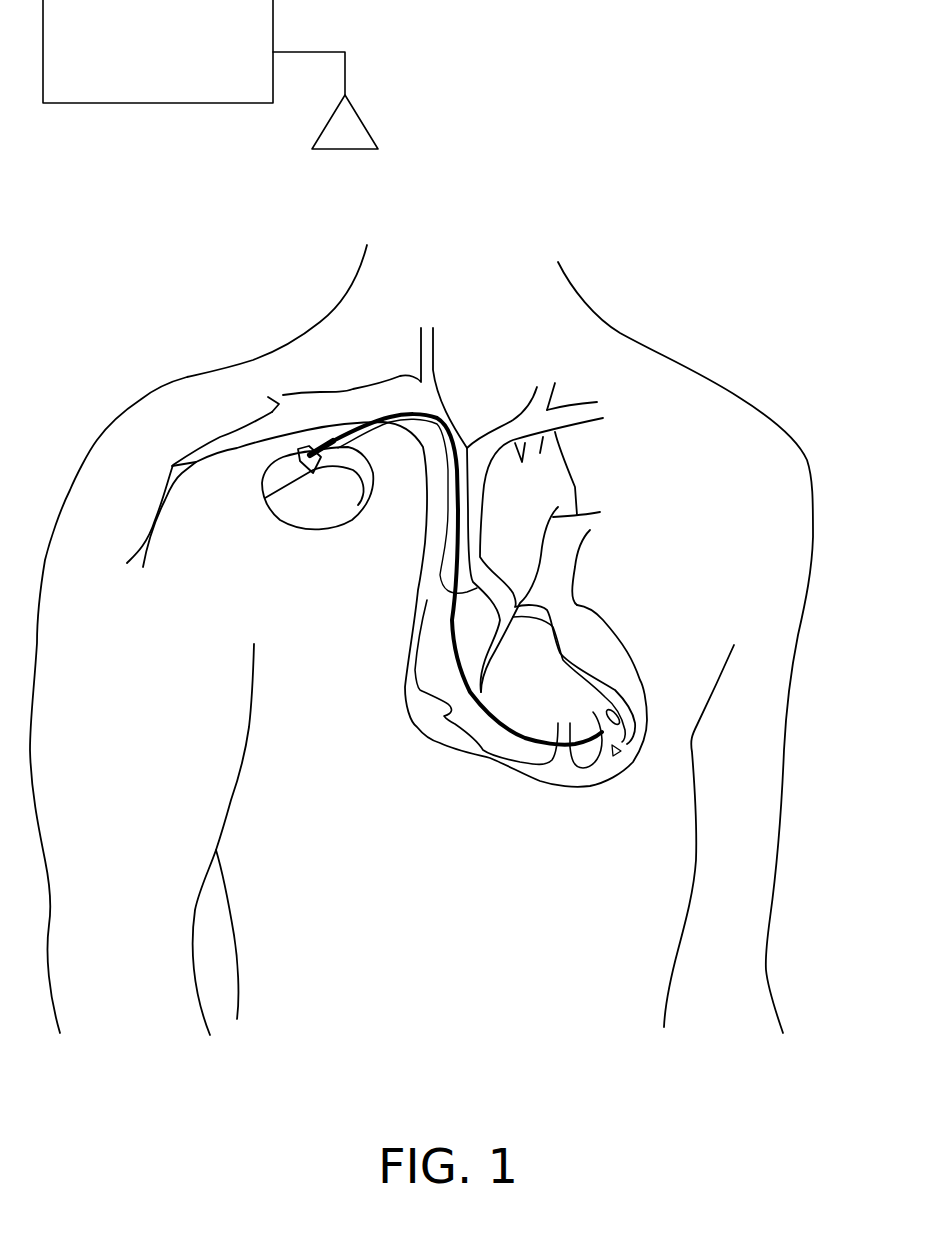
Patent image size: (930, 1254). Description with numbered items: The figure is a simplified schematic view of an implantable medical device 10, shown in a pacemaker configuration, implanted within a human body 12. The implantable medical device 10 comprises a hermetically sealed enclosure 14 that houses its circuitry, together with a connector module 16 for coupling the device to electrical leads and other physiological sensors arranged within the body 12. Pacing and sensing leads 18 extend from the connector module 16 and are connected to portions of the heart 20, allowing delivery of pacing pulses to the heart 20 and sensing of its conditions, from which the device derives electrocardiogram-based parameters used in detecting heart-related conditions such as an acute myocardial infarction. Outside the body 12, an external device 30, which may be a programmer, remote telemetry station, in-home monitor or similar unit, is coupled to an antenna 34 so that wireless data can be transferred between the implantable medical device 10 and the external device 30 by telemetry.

The implantable medical device 10 is at (396, 563).
The human body 12 is at (657, 300).
The hermetically sealed enclosure 14 is at (337, 507).
The connector module 16 is at (287, 477).
The pacing and sensing leads 18 is at (438, 543).
The heart 20 is at (447, 748).
The external device 30 is at (175, 95).
The antenna 34 is at (368, 125).